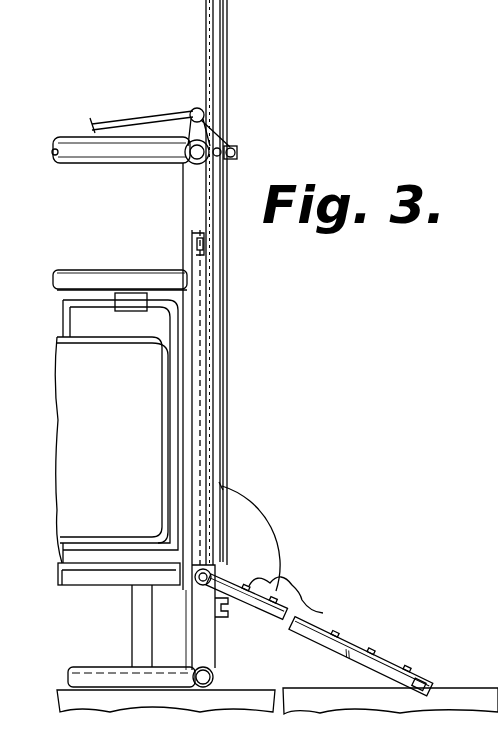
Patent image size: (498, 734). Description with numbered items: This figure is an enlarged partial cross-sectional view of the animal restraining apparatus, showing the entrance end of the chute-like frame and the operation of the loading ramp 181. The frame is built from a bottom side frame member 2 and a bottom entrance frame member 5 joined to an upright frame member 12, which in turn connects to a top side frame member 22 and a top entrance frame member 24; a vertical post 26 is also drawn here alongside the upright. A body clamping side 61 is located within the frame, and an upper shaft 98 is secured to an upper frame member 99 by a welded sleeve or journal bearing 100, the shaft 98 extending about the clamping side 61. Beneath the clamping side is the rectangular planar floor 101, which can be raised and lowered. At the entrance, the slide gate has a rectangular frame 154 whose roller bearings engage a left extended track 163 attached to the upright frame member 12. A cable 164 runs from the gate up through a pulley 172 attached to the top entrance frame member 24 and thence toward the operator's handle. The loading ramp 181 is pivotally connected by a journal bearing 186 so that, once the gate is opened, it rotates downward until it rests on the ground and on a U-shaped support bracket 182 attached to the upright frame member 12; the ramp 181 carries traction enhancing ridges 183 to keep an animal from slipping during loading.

The bottom side frame member 2 is at (106, 666).
The bottom entrance frame member 5 is at (215, 673).
The upright frame member 12 is at (207, 643).
The top side frame member 22 is at (110, 165).
The top entrance frame member 24 is at (166, 165).
The vertical post 26 is at (226, 72).
The body clamping side 61 is at (62, 425).
The upper shaft 98 is at (95, 298).
The upper frame member 99 is at (151, 270).
The journal bearing 100 is at (140, 311).
The floor 101 is at (82, 586).
The rectangular frame 154 is at (237, 141).
The left extended track 163 is at (222, 60).
The cable 164 is at (150, 110).
The pulley 172 is at (193, 108).
The loading ramp 181 is at (195, 238).
The support bracket 182 is at (209, 631).
The traction enhancing ridges 183 is at (338, 623).
The journal bearing 186 is at (231, 573).